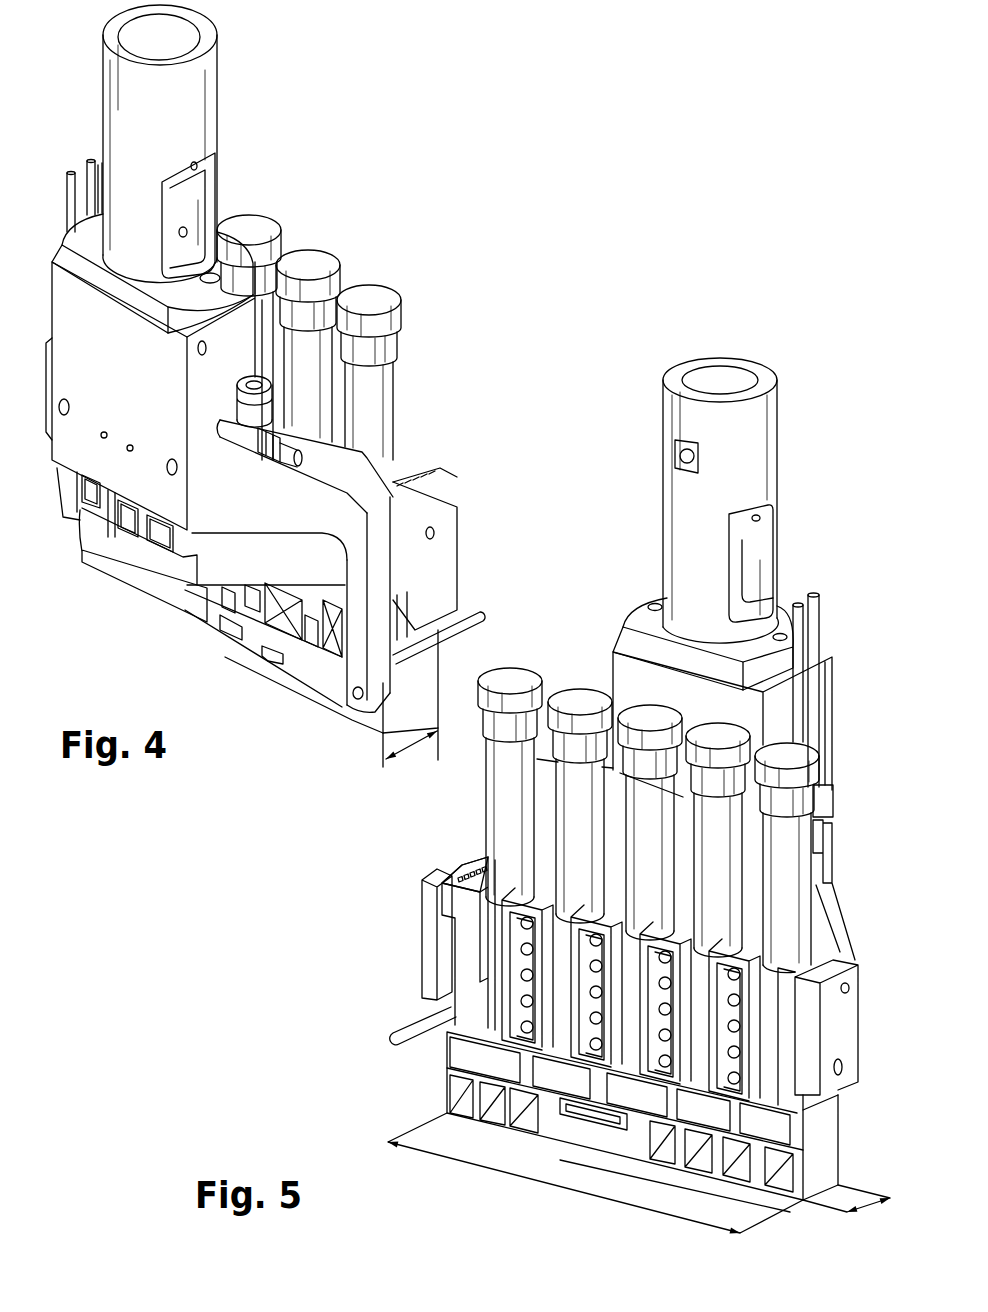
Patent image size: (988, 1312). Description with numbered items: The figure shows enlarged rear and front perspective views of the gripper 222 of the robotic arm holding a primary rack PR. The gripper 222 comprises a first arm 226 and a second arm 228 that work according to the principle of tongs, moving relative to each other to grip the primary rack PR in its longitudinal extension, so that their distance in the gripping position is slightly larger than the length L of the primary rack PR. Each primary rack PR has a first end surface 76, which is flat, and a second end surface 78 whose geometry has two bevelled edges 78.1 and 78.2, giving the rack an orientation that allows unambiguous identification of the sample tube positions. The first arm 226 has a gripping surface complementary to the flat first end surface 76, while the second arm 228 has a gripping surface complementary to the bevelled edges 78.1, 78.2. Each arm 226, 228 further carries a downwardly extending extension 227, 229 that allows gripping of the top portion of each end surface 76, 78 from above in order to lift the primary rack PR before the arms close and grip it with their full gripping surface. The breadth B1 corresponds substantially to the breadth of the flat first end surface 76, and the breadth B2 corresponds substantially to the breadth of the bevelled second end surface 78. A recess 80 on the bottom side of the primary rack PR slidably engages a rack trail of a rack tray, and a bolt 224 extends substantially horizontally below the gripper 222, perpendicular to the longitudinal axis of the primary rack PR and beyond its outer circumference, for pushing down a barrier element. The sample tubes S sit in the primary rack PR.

In FIG. 4, the gripper 222 is at (231, 125).
In FIG. 5, the gripper 222 is at (644, 532).
In FIG. 4, the sensor / probe pins S is at (222, 206).
In FIG. 5, the sensor / probe pins S is at (590, 690).
In FIG. 4, the first arm 226 is at (463, 489).
In FIG. 5, the first arm 226 is at (410, 897).
In FIG. 4, the downwardly extending extension 227 is at (447, 580).
In FIG. 5, the downwardly extending extension 227 is at (427, 942).
In FIG. 4, the bolt 224 is at (484, 612).
In FIG. 5, the bolt 224 is at (408, 1027).
In FIG. 4, the first end surface 76 is at (427, 683).
In FIG. 5, the second end surface 78 is at (827, 1173).
In FIG. 5, the bevelled edge 78.1 is at (780, 1197).
In FIG. 4, the bevelled edge 78.2 is at (80, 560).
In FIG. 4, the recess 80 is at (257, 647).
In FIG. 5, the recess 80 is at (603, 1143).
In FIG. 5, the second arm 228 is at (844, 943).
In FIG. 5, the downwardly extending extension 229 is at (853, 1037).
In FIG. 4, the primary rack PR is at (323, 683).
In FIG. 5, the primary rack PR is at (838, 1127).
In FIG. 4, the breadth of the main centre section B1 is at (410, 750).
In FIG. 5, the breadth of the second main centre section B2 is at (880, 1200).
In FIG. 5, the length of a primary rack L is at (577, 1190).